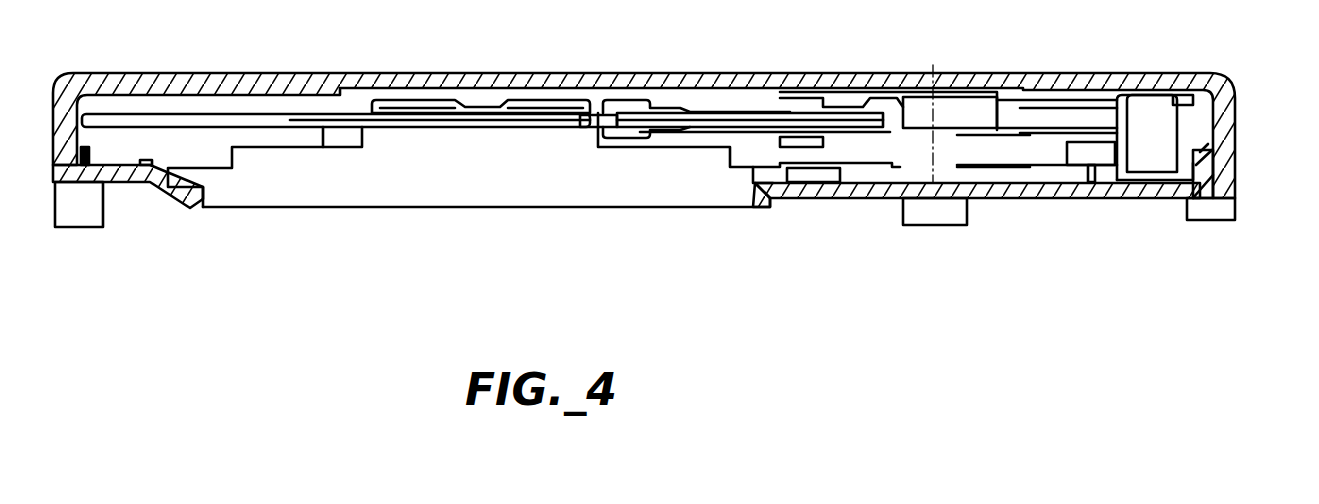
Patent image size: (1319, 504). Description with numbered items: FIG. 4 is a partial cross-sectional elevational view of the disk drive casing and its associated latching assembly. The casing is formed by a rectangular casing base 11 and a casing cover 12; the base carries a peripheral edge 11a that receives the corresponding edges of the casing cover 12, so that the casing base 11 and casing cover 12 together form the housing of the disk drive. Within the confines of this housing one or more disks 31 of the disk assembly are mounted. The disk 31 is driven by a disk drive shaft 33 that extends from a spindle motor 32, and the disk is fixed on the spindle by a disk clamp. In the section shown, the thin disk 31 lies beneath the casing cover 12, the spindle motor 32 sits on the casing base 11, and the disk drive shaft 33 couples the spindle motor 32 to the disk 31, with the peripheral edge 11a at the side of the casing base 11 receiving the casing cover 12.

The casing base 11 is at (1163, 198).
The peripheral edge 11a is at (1232, 148).
The casing cover 12 is at (1129, 81).
The disk 31 is at (332, 121).
The spindle motor 32 is at (612, 157).
The disk drive shaft 33 is at (556, 121).